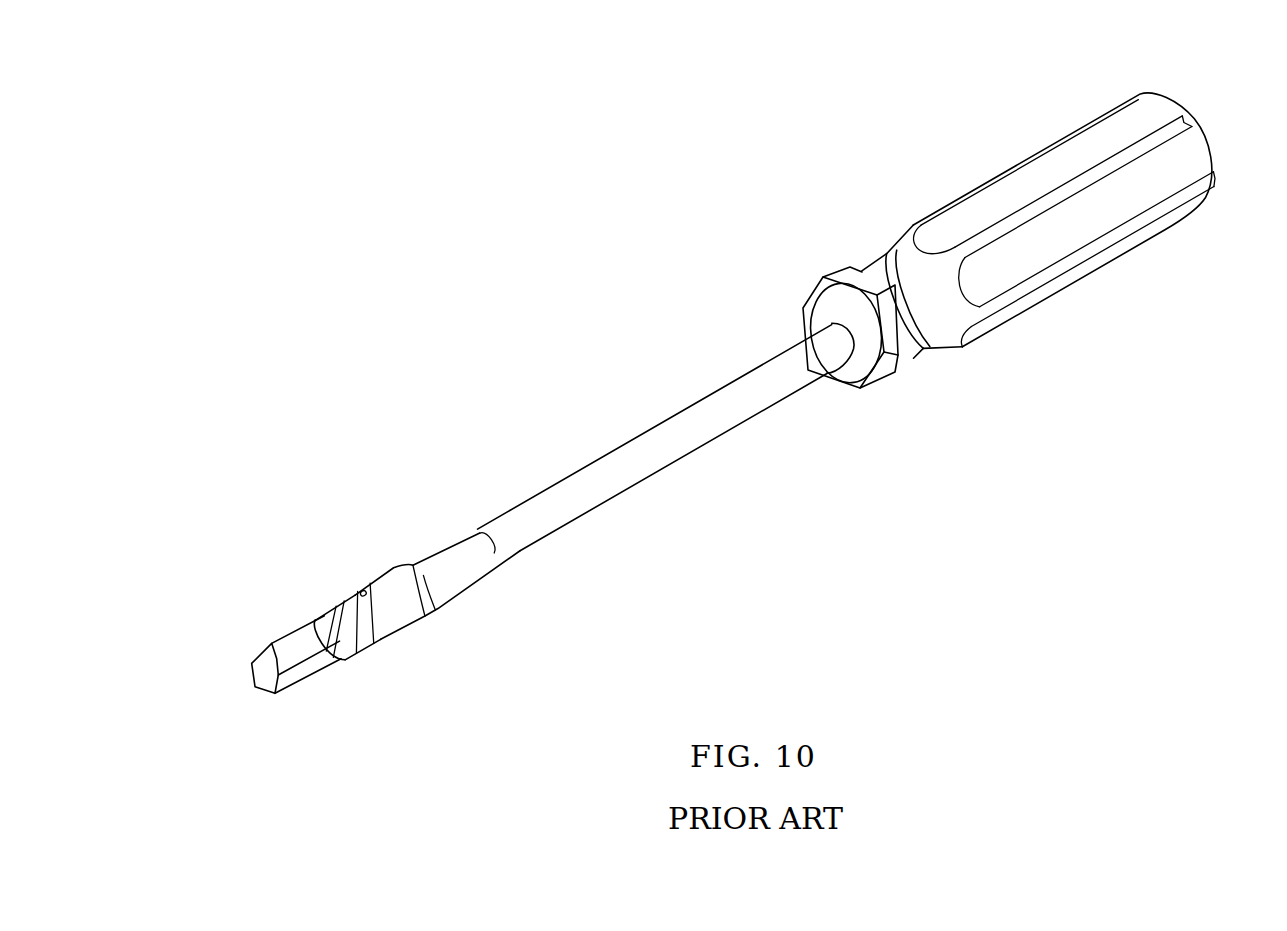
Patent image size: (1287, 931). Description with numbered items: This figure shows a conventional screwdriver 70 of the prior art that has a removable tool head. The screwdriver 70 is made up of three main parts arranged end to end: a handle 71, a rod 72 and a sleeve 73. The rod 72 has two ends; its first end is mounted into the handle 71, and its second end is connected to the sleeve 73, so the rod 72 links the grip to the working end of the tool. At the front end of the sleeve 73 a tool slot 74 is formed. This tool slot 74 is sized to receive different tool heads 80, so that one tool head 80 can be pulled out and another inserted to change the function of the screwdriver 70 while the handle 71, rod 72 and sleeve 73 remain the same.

The conventional screwdriver 70 is at (709, 387).
The handle 71 is at (1161, 103).
The rod 72 is at (607, 462).
The sleeve 73 is at (415, 612).
The tool slot 74 is at (312, 609).
The tool head 80 is at (240, 692).